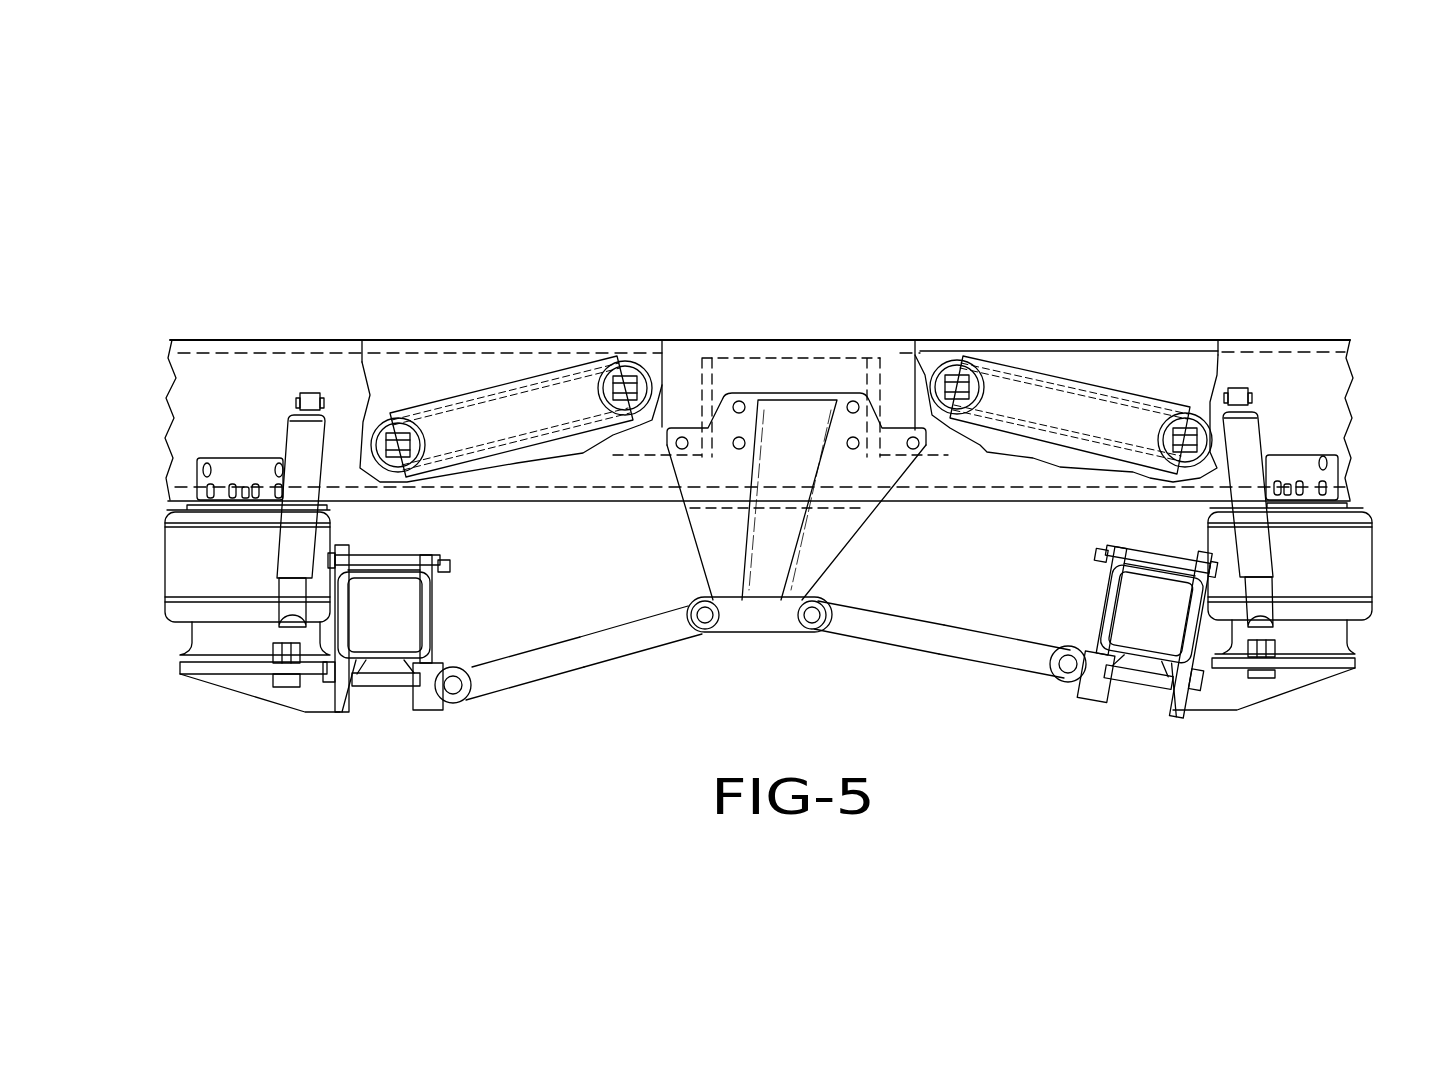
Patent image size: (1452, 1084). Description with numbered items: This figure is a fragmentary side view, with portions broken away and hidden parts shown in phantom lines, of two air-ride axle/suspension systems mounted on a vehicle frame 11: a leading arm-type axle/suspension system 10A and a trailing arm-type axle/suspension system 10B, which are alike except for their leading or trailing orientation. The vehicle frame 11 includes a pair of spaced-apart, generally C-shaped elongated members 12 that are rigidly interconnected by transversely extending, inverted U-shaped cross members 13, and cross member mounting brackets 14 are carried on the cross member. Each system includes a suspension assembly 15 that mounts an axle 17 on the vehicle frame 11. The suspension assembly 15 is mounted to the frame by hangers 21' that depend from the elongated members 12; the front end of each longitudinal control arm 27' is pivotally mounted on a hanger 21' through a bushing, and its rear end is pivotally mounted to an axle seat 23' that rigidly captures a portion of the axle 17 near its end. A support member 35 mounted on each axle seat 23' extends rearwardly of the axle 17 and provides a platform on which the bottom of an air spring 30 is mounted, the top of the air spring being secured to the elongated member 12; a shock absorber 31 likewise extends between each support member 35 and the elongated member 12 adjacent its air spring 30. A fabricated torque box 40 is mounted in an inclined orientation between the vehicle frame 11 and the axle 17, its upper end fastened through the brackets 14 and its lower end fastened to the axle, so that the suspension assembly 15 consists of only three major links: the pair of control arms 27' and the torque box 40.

The leading arm-type air-ride axle/suspension system 10A is at (186, 704).
The trailing arm-type air-ride axle/suspension system 10B is at (1400, 668).
The vehicle frame 11 is at (980, 326).
The elongated member 12 is at (1285, 343).
The cross member 13 is at (773, 360).
The cross member mounting bracket 14 is at (676, 378).
The suspension assembly 15 is at (544, 689).
The axle 17 is at (370, 640).
The hanger 21' is at (796, 556).
The axle seat 23' is at (803, 646).
The longitudinal control arm 27' is at (764, 605).
The air spring 30 is at (210, 582).
The shock absorber 31 is at (305, 450).
The support member 35 is at (265, 690).
The torque box 40 is at (458, 392).